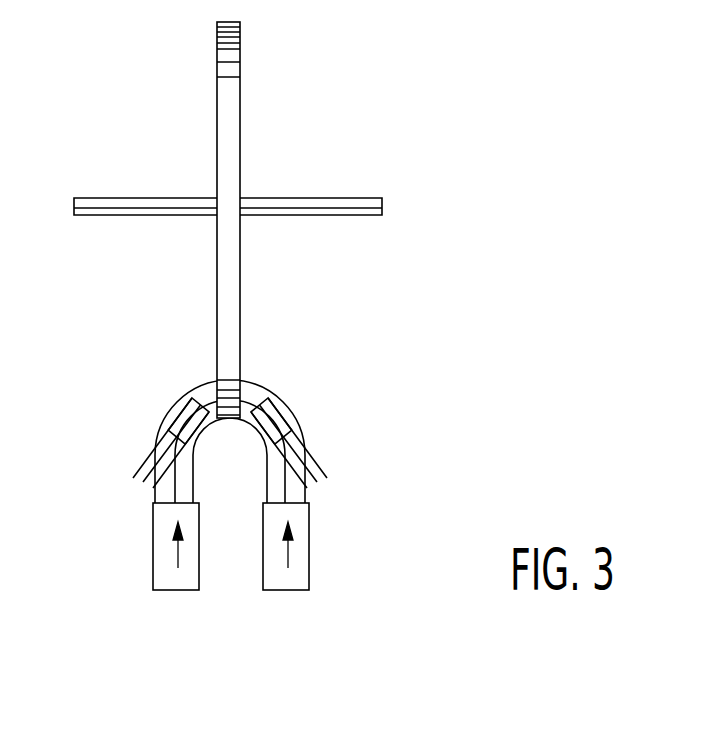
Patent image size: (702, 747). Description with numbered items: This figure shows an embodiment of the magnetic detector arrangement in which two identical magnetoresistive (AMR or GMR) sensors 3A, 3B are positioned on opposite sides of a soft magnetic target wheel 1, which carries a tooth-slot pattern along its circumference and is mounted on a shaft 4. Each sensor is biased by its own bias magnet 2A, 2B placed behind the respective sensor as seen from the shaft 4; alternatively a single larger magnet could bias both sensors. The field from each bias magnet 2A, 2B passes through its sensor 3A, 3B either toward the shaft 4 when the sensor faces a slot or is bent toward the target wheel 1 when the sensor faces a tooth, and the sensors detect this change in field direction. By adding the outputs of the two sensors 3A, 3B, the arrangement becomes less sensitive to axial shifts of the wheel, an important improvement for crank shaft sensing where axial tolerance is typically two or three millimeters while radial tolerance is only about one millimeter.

The soft magnetic target wheel 1 is at (227, 117).
The shaft 4 is at (321, 199).
The first magnetoresistive sensor 3A is at (177, 428).
The second magnetoresistive sensor 3B is at (284, 428).
The first bias magnet 2A is at (170, 578).
The second bias magnet 2B is at (295, 578).